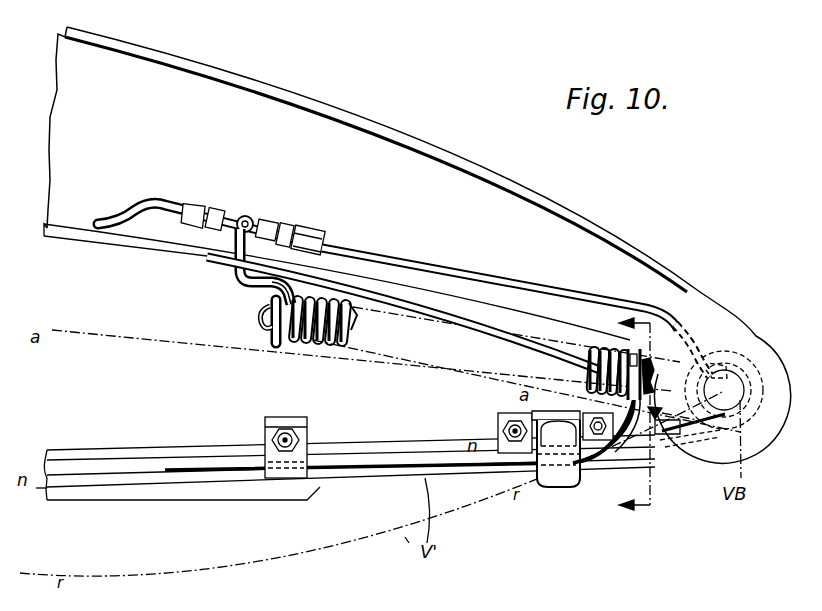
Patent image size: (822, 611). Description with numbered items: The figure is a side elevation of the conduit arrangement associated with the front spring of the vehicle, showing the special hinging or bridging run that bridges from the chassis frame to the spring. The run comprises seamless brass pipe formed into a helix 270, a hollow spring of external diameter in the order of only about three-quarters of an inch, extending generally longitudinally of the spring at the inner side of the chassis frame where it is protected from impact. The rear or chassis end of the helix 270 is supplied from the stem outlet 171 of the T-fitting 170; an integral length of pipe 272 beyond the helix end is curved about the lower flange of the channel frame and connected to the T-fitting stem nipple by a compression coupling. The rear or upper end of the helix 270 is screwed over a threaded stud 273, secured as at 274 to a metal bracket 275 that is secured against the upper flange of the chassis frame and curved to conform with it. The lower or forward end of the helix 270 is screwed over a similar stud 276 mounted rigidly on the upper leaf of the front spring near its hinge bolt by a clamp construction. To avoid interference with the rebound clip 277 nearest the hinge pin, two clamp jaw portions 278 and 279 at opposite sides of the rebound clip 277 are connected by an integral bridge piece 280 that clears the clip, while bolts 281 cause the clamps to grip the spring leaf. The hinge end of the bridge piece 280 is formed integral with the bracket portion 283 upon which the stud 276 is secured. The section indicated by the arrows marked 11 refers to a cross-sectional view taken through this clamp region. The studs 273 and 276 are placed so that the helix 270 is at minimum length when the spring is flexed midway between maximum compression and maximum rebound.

The T-fitting 170 is at (236, 212).
The stem outlet 171 is at (253, 219).
The length of pipe 272 is at (233, 275).
The metal bracket 275 is at (266, 268).
The securing point of stud to bracket 274 is at (257, 318).
The threaded stud 273 is at (300, 310).
The helix 270 is at (350, 322).
The bridge piece 280 is at (545, 416).
The bolts 281 is at (500, 420).
The rebound clip 277 is at (552, 470).
The clamp jaw portion 278 is at (507, 467).
The clamp jaw portion 279 is at (565, 466).
The stud 276 is at (622, 362).
The bracket portion 283 is at (653, 395).
The section line 11- 11 is at (648, 417).